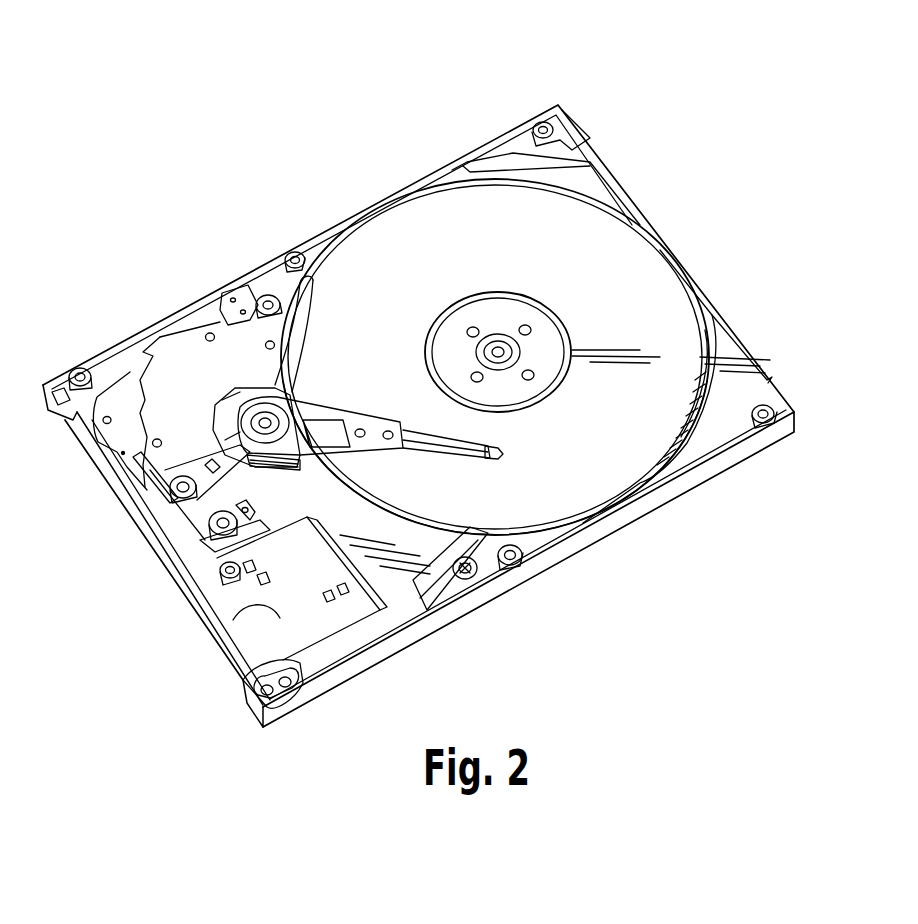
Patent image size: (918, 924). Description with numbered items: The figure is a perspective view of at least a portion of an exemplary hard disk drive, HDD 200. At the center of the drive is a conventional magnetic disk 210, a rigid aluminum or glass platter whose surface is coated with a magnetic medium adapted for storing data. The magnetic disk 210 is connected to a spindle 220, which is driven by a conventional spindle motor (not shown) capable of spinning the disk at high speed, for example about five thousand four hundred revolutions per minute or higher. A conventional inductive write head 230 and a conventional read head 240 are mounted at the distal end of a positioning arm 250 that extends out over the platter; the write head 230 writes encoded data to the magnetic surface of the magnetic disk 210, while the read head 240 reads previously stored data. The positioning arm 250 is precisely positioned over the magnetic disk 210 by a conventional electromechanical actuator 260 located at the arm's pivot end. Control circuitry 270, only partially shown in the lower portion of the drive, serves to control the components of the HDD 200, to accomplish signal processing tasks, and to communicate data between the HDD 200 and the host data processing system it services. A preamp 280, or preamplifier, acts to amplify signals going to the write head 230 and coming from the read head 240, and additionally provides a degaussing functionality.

The HDD 200 is at (166, 95).
The magnetic disk 210 is at (398, 230).
The spindle 220 is at (492, 340).
The inductive write head 230 is at (510, 450).
The read head 240 is at (490, 466).
The positioning arm 250 is at (357, 420).
The electromechanical actuator 260 is at (178, 355).
The control circuitry 270 is at (275, 608).
The preamp 280 is at (296, 388).